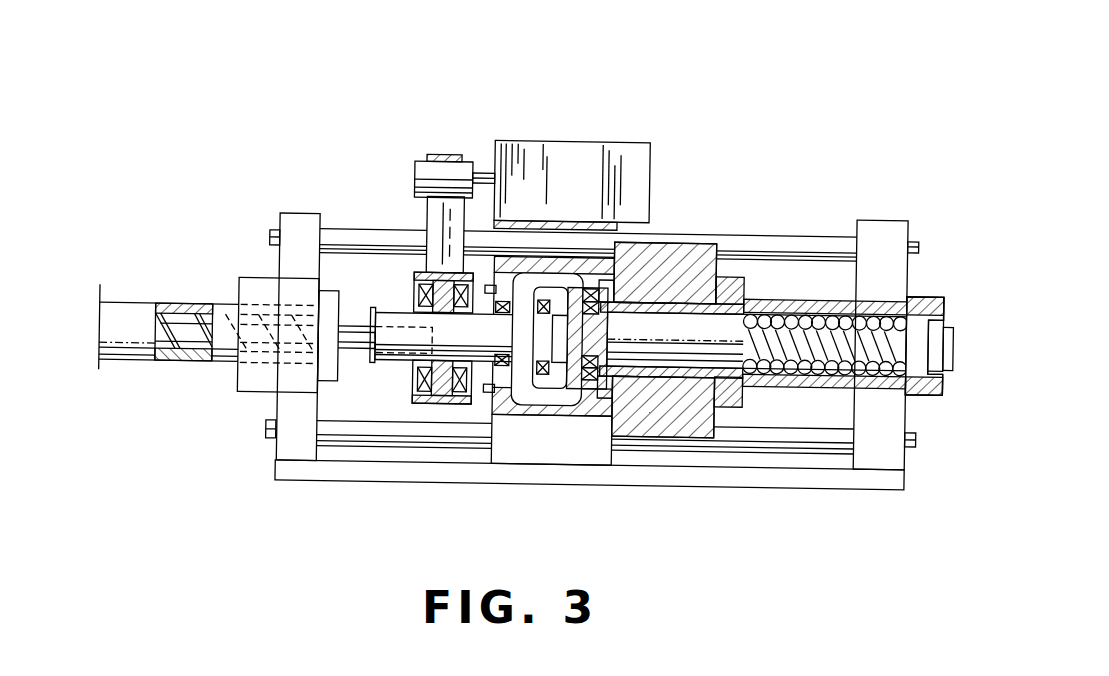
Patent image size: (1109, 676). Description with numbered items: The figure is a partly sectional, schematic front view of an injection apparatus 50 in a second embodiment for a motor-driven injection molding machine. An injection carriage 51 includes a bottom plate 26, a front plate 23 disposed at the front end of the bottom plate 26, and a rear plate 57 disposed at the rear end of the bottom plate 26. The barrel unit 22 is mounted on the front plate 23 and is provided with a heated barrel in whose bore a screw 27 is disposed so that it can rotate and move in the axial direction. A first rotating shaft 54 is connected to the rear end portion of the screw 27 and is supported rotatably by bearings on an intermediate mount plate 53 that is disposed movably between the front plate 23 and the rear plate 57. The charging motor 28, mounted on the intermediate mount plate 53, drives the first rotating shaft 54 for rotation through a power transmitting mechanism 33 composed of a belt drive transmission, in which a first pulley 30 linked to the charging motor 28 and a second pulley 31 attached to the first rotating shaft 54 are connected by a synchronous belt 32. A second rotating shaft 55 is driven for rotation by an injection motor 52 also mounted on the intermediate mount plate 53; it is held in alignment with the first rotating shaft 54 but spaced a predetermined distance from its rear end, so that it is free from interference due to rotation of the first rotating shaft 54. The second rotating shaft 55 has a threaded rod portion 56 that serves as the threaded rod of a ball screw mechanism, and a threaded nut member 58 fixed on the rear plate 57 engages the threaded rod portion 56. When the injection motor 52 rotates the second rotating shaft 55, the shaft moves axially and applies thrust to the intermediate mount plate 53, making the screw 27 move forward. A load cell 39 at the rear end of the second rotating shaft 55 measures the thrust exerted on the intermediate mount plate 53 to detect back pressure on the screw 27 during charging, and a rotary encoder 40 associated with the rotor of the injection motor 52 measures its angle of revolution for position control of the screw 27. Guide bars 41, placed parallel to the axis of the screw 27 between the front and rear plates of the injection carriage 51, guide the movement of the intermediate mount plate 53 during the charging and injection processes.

The barrel unit 22 is at (120, 304).
The front plate 23 is at (282, 445).
The bottom plate 26 is at (457, 472).
The screw 27 is at (178, 330).
The charging motor 28 is at (563, 137).
The first pulley 30 is at (420, 175).
The second pulley 31 is at (412, 378).
The synchronous belt 32 is at (432, 216).
The power transmitting mechanism 33 is at (464, 149).
The load cell 39 is at (917, 285).
The rotary encoder 40 is at (728, 270).
The guide bars 41 is at (342, 234).
The injection apparatus 50 is at (150, 254).
The injection carriage 51 is at (305, 481).
The injection motor 52 is at (665, 424).
The intermediate mount plate 53 is at (553, 444).
The first rotating shaft 54 is at (405, 314).
The second rotating shaft 55 is at (657, 317).
The threaded rod portion 56 is at (820, 327).
The rear plate 57 is at (893, 445).
The threaded nut member 58 is at (787, 295).